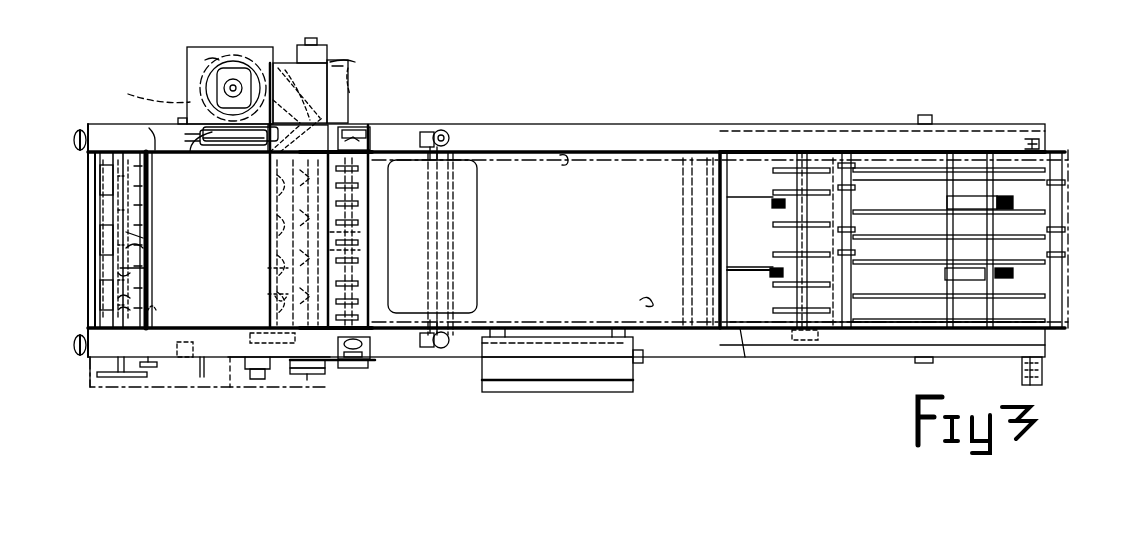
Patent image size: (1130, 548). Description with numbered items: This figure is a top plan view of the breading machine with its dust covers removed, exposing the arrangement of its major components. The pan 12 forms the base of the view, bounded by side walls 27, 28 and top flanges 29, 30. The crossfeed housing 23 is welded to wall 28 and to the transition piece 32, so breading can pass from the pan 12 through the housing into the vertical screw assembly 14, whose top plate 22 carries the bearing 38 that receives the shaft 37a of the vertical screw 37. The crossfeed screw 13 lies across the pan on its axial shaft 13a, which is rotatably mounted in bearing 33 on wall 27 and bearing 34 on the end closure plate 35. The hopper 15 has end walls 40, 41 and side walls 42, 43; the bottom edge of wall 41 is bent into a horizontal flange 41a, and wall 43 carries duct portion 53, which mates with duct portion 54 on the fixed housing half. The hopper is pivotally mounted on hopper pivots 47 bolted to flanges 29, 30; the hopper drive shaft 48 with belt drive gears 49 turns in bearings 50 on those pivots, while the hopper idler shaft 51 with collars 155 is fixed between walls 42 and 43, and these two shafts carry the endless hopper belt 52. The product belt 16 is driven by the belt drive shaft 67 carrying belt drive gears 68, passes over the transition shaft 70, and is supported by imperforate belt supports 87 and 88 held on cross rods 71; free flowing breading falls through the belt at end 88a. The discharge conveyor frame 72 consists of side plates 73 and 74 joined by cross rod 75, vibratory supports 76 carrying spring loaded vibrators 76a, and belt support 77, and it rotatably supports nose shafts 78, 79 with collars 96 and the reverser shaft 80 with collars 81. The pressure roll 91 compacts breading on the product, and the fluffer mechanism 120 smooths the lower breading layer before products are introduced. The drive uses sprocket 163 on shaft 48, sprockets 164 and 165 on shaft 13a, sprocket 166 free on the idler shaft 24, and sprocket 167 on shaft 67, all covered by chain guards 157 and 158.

The pan 12 is at (745, 357).
The crossfeed screw 13 is at (272, 224).
The axial shaft 13a is at (294, 95).
The vertical screw assembly 14 is at (200, 90).
The hopper 15 is at (155, 150).
The product belt 16 is at (575, 158).
The top plate 22 is at (215, 53).
The crossfeed housing 23 is at (346, 75).
The idler shaft 24 is at (250, 340).
The side wall 27 is at (745, 332).
The side wall 28 is at (752, 150).
The top flange 29 is at (775, 352).
The top flange 30 is at (876, 130).
The transition piece 32 is at (308, 66).
The bearing 33 is at (300, 352).
The bearing 34 is at (328, 62).
The end closure plate 35 is at (352, 67).
The vertical screw 37 is at (130, 94).
The shaft 37a is at (348, 63).
The bearing 38 is at (208, 80).
The end wall 40 is at (93, 198).
The end wall 41 is at (315, 192).
The horizontal flange 41a is at (355, 204).
The side wall 42 is at (172, 328).
The side wall 43 is at (168, 153).
The hopper pivots 47 is at (372, 152).
The hopper drive shaft 48 is at (360, 226).
The belt drive gears 49 is at (368, 245).
The bearings 50 is at (375, 128).
The hopper idler shaft 51 is at (150, 270).
The hopper belt 52 is at (113, 225).
The duct portion 53 is at (268, 160).
The duct portion 54 is at (200, 155).
The belt drive shaft 67 is at (143, 225).
The belt drive gears 68 is at (151, 205).
The transition shaft 70 is at (272, 297).
The cross rods 71 is at (270, 271).
The discharge conveyor frame 72 is at (892, 332).
The side plate 73 is at (897, 322).
The side plate 74 is at (915, 163).
The cross rod 75 is at (993, 238).
The vibratory supports 76 is at (745, 258).
The spring loaded vibrators 76a is at (778, 208).
The belt support 77 is at (840, 265).
The nose shaft 78 is at (855, 200).
The nose shaft 79 is at (1066, 178).
The reverser shaft 80 is at (800, 242).
The collars 81 is at (748, 259).
The belt support 87 is at (425, 135).
The belt support 88 is at (655, 320).
The end 88a is at (717, 165).
The pressure roll 91 is at (478, 268).
The collars 96 is at (855, 228).
The fluffer mechanism 120 is at (158, 307).
The collars 155 is at (143, 246).
The chain guard 157 is at (395, 392).
The chain guard 158 is at (90, 374).
The sprocket 163 is at (372, 367).
The sprocket 164 is at (330, 362).
The sprocket 165 is at (310, 375).
The sprocket 166 is at (262, 374).
The sprocket 167 is at (148, 366).